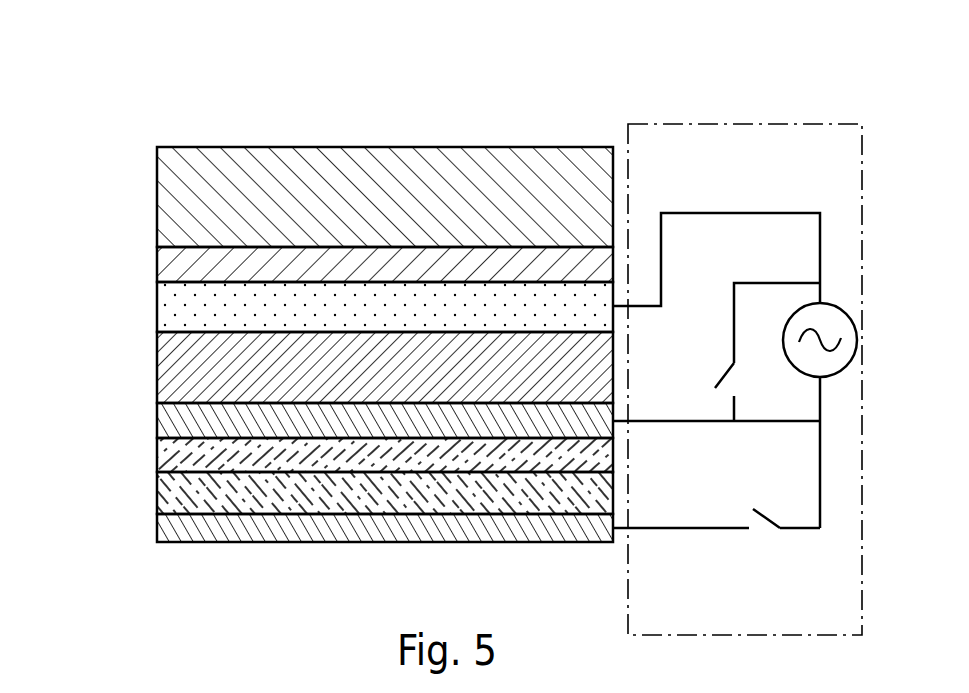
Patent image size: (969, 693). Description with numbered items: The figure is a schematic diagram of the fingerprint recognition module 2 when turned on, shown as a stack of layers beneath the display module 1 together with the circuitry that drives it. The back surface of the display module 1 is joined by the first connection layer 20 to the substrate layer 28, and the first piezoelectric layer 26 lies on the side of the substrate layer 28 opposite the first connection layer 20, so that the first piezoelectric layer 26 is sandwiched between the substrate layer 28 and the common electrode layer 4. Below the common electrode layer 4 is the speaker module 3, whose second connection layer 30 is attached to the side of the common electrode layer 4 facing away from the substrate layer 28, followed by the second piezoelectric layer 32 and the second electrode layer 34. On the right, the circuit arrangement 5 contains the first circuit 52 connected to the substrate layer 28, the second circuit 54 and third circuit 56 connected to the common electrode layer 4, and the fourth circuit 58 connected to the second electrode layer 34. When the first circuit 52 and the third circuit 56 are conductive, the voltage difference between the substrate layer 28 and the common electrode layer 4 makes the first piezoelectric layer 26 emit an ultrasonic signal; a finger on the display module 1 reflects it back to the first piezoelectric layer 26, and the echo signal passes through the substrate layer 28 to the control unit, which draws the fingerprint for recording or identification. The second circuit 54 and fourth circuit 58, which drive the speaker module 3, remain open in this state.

The display module 1 is at (157, 200).
The fingerprint recognition module 2 is at (50, 247).
The first connection layer 20 is at (157, 268).
The substrate layer 28 is at (157, 310).
The first piezoelectric layer 26 is at (157, 371).
The common electrode layer 4 is at (157, 420).
The speaker module 3 is at (50, 440).
The second connection layer 30 is at (157, 460).
The second piezoelectric layer 32 is at (157, 498).
The second electrode layer 34 is at (157, 534).
The control circuit 5 is at (747, 124).
The first circuit 52 is at (778, 213).
The second circuit 54 is at (745, 282).
The third circuit 56 is at (780, 422).
The fourth circuit 58 is at (822, 516).